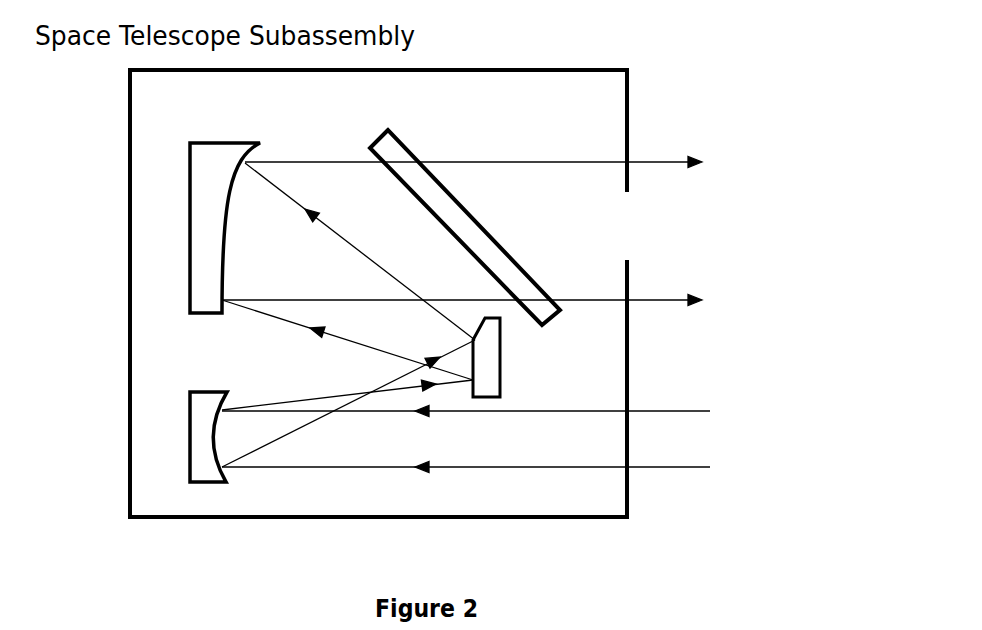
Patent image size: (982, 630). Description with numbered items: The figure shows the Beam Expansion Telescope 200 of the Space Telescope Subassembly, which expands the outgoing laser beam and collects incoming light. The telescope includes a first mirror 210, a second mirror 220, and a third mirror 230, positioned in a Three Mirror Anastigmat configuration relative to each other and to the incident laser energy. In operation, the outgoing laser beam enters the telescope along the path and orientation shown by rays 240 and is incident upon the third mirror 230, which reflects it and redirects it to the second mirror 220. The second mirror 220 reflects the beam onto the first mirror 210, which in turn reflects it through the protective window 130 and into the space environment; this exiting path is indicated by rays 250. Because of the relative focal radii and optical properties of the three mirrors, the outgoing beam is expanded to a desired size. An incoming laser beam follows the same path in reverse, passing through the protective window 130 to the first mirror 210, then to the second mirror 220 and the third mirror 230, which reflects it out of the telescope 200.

The protective window 130 is at (467, 207).
The Beam Expansion Telescope 200 is at (760, 179).
The first mirror 210 is at (190, 220).
The second mirror 220 is at (500, 358).
The third mirror 230 is at (190, 438).
The rays of outgoing beam entering the BET 240 is at (710, 402).
The rays of beam exiting the BET 250 is at (710, 153).